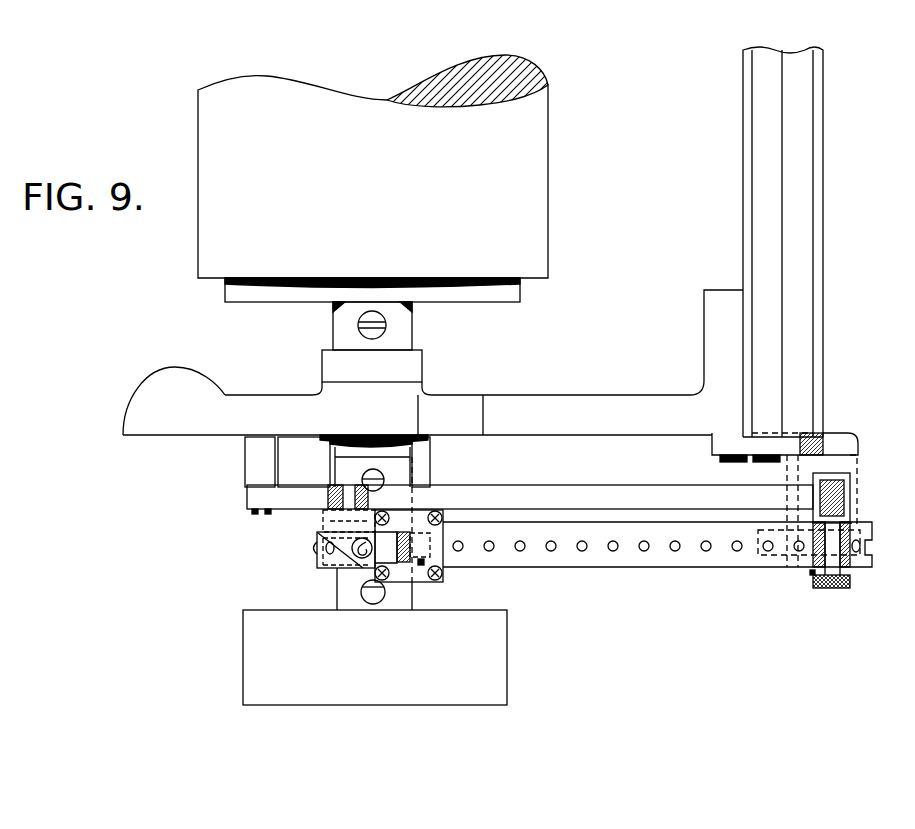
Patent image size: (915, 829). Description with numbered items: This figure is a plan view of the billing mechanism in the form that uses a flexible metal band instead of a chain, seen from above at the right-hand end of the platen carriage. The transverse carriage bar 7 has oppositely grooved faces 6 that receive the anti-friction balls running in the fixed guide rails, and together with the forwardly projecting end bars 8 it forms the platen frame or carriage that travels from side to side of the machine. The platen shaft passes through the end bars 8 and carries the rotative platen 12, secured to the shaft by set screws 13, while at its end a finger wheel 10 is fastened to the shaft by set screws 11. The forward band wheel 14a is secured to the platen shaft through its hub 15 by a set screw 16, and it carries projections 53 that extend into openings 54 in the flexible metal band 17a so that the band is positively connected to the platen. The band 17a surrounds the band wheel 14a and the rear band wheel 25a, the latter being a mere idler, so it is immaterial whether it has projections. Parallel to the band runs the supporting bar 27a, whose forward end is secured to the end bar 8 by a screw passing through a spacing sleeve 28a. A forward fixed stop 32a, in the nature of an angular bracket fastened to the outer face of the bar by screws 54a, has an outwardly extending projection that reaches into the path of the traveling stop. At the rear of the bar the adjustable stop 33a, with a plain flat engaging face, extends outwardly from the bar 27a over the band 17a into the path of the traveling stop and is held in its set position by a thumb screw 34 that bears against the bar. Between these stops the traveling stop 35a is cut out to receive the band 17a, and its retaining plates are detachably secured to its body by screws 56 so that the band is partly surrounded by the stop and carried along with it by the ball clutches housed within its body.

The platen 12 is at (389, 176).
The set screws 13 is at (380, 321).
The end bars 8 is at (433, 362).
The transverse carriage bar 7 is at (747, 218).
The oppositely grooved faces 6 is at (808, 388).
The hub 15 is at (405, 473).
The set screw 16 is at (365, 481).
The supporting bar 27a is at (679, 488).
The adjustable stop 33a is at (840, 480).
The spacing sleeve 28a is at (252, 516).
The flexible metal band 17a is at (663, 568).
The openings 54 is at (627, 557).
The band wheel 25a is at (783, 548).
The thumb screw 34 is at (825, 588).
The band wheel 14a is at (317, 560).
The forward fixed stop 32a is at (340, 548).
The projections 53 is at (313, 549).
The screws 54a is at (350, 515).
The traveling stop 35a is at (405, 578).
The screws 56 is at (450, 592).
The set screws 11 is at (367, 602).
The finger wheels 10 is at (375, 657).